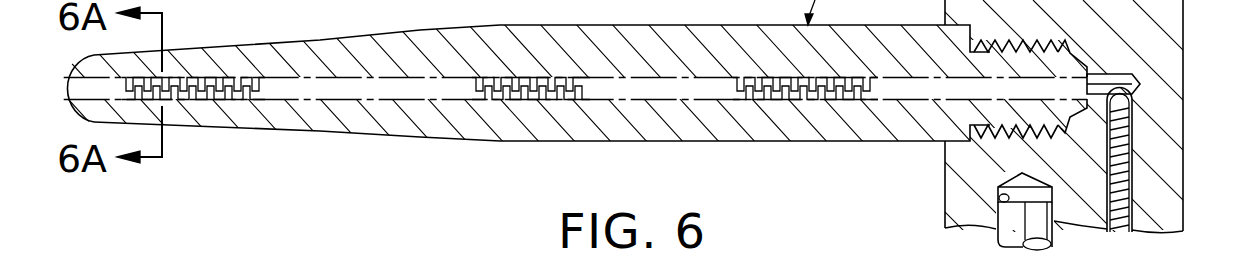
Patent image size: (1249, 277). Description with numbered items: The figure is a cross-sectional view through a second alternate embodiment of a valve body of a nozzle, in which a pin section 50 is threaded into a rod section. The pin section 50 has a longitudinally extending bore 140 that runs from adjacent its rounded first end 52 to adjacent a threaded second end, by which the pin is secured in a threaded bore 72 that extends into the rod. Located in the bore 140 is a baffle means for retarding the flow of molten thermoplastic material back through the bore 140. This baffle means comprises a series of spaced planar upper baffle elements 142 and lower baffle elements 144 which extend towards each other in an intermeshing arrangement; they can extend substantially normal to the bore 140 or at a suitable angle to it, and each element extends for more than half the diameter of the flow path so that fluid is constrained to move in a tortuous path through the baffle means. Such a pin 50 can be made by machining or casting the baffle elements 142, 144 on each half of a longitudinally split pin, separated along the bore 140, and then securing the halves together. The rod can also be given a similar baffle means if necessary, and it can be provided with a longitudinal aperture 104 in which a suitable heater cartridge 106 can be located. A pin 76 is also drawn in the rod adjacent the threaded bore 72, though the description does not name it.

The pin section 50 is at (745, 150).
The rounded first end 52 is at (83, 113).
The longitudinally extending bore 140 is at (377, 92).
The upper baffle elements 142 is at (246, 78).
The lower baffle elements 144 is at (240, 100).
The threaded bore 72 is at (1012, 132).
The set screw 76 is at (1133, 133).
The longitudinal aperture 104 is at (998, 207).
The heater cartridge 106 is at (1013, 232).